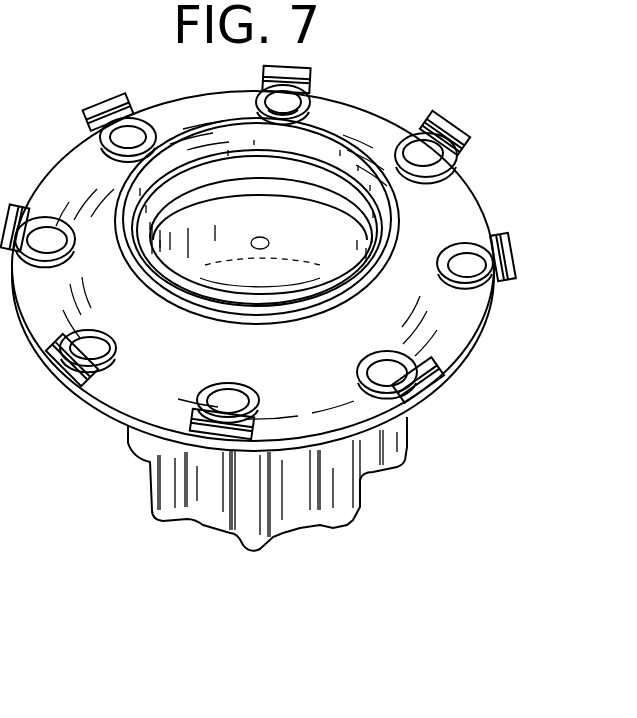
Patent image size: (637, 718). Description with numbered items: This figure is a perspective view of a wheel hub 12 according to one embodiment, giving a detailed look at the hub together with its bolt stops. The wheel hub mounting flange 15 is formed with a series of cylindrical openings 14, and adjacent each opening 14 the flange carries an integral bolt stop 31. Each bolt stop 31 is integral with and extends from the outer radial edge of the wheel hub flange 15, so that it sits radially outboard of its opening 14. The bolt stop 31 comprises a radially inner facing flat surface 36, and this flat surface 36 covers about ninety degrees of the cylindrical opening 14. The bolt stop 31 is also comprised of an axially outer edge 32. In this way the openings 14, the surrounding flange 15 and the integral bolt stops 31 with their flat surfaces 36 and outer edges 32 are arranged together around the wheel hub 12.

The wheel hub 12 is at (160, 490).
The opening 14 is at (263, 85).
The wheel hub mounting flange 15 is at (473, 347).
The bolt stop 31 is at (440, 127).
The axially outer edge 32 is at (463, 143).
The radially inner facing flat surface 36 is at (410, 133).